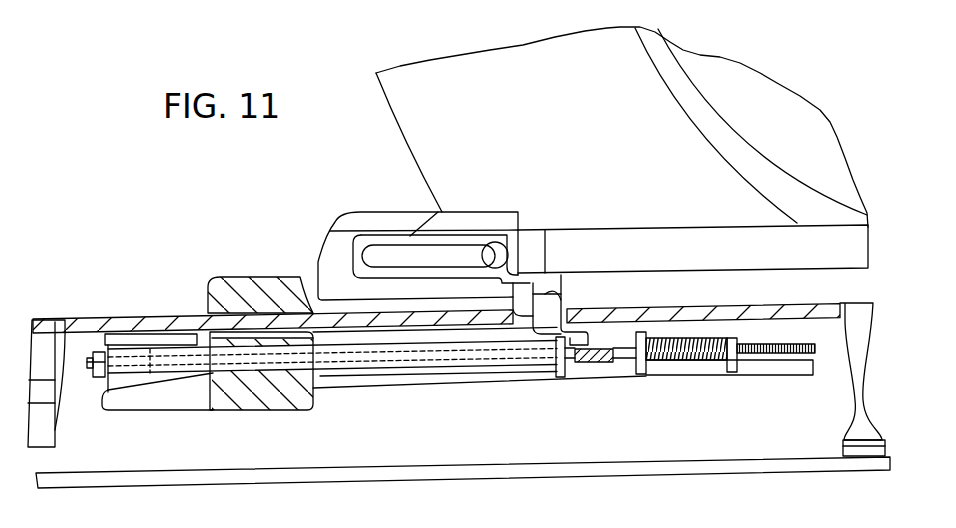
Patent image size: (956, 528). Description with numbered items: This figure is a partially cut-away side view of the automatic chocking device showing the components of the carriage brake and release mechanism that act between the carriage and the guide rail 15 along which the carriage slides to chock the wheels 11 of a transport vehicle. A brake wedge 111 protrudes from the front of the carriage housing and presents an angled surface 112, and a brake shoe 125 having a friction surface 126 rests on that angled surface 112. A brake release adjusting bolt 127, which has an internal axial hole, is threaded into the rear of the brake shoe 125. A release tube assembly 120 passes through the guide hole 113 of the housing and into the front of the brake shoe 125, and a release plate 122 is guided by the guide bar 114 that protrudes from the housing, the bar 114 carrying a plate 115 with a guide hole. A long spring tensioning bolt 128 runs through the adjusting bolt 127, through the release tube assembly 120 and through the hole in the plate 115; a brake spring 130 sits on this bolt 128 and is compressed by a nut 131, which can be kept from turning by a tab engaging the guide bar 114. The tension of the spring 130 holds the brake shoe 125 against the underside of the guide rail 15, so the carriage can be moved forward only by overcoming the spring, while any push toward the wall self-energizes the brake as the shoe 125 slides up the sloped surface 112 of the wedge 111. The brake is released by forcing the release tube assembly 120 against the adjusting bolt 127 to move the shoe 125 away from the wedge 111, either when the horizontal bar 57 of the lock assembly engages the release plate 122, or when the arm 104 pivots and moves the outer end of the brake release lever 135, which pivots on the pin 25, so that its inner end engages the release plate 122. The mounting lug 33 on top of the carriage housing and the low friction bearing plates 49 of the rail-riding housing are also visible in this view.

The wheels 11 is at (390, 120).
The guide rail 15 is at (737, 302).
The pin 25 is at (562, 270).
The mounting lug 33 is at (413, 212).
The low friction bearing plates 49 is at (230, 312).
The horizontal bar 57 is at (598, 363).
The arm 104 is at (375, 238).
The brake wedge 111 is at (153, 412).
The angled surface 112 is at (110, 393).
The guide hole 113 is at (243, 373).
The guide bar 114 is at (343, 385).
The plate 115 is at (643, 375).
The release tube assembly 120 is at (418, 365).
The release plate 122 is at (553, 374).
The brake shoe 125 is at (100, 350).
The friction surface 126 is at (153, 322).
The brake release adjusting bolt 127 is at (93, 356).
The spring tensioning bolt 128 is at (787, 343).
The brake spring 130 is at (687, 340).
The nut 131 is at (740, 367).
The brake release lever 135 is at (518, 272).